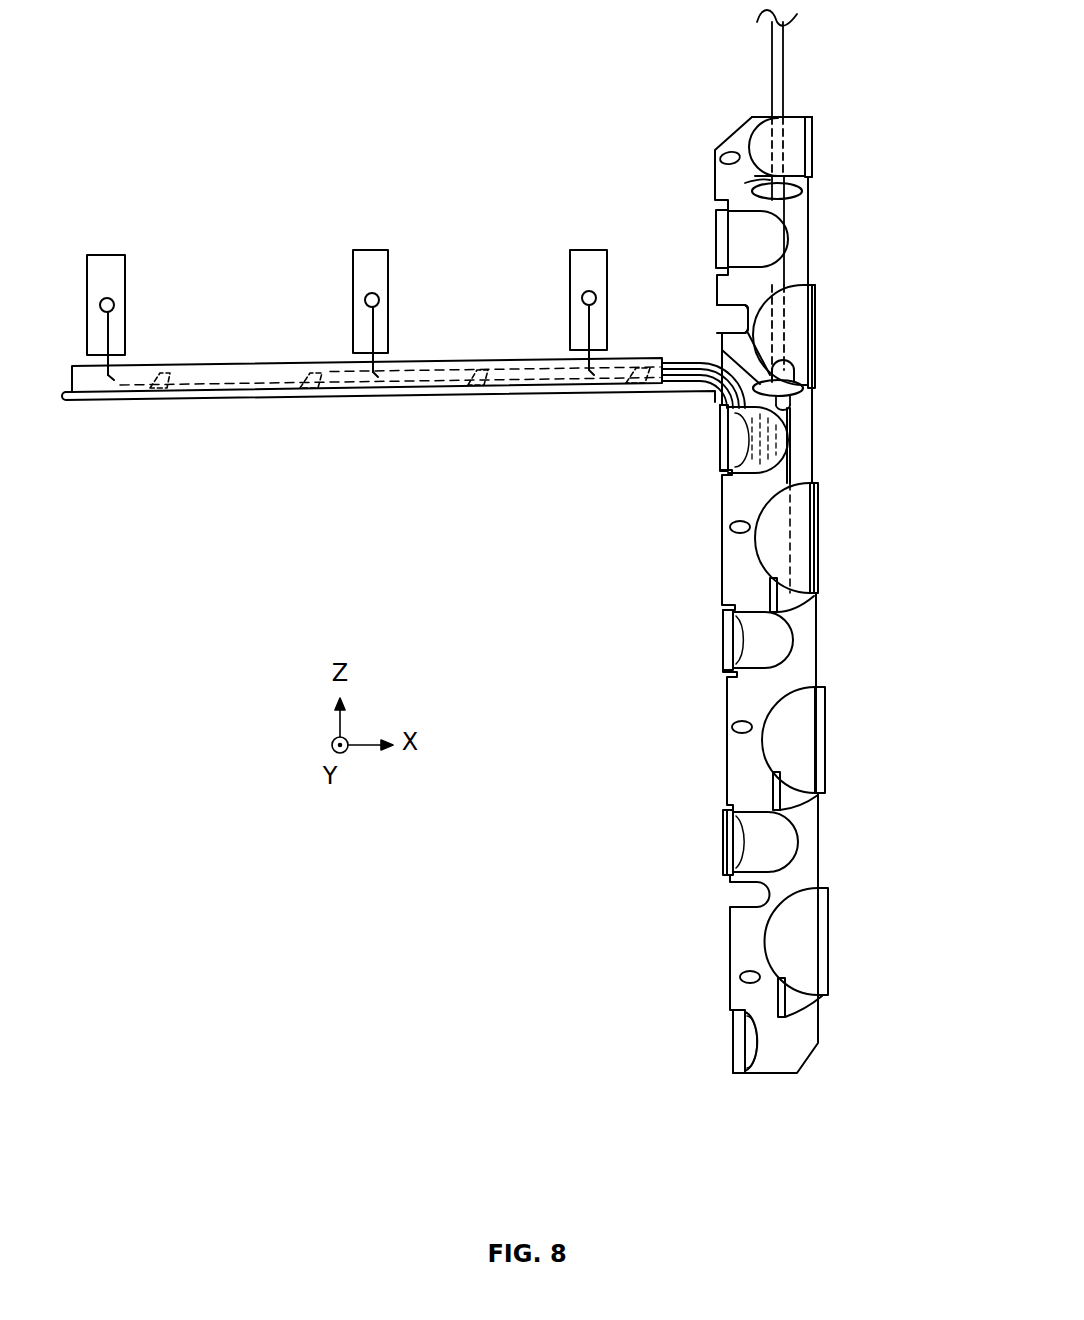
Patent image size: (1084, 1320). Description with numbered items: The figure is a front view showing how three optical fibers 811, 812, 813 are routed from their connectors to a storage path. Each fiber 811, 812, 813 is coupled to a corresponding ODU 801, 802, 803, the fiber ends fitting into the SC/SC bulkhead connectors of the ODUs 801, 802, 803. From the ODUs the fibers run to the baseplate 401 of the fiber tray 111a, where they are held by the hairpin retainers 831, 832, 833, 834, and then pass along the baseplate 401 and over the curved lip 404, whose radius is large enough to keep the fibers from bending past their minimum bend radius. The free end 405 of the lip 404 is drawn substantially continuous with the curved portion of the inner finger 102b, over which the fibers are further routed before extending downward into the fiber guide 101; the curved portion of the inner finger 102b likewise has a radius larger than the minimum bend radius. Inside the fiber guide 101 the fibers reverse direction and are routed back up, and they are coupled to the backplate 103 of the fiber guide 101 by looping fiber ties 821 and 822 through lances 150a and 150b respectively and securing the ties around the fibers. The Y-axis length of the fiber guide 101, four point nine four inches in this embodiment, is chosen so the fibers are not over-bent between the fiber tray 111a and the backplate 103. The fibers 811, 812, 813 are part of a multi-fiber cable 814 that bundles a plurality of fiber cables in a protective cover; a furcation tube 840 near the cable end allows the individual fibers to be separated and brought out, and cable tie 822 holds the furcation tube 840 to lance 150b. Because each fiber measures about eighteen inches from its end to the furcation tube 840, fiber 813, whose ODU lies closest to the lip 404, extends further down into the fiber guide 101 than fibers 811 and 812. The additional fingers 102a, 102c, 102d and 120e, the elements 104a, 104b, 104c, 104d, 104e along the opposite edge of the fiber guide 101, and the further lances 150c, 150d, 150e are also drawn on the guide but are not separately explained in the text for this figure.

The fiber guide 101 is at (818, 1058).
The backplate 103 is at (745, 933).
The multi-fiber cable 814 is at (787, 37).
The lens 104a is at (795, 137).
The lens 104b is at (798, 318).
The lens 104c is at (807, 580).
The lens 104d is at (812, 707).
The lens 104e is at (810, 910).
The fiber tie 821 is at (800, 190).
The fiber tie 822 is at (797, 405).
The furcation tube 840 is at (790, 375).
The lance 150a is at (750, 178).
The lance 150b is at (723, 333).
The lens holder 150c is at (800, 600).
The lens holder 150d is at (790, 802).
The lens holder 150e is at (792, 995).
The lens 102a is at (733, 237).
The inner finger 102b is at (733, 437).
The lens 102c is at (737, 640).
The lens 102d is at (740, 842).
The lens 120e is at (745, 1045).
The curved lip 404 is at (677, 392).
The free end 405 is at (717, 402).
The baseplate 401 is at (232, 392).
The fiber tray 111a is at (112, 410).
The hairpin retainer 831 is at (163, 392).
The hairpin retainer 832 is at (312, 392).
The hairpin retainer 833 is at (480, 388).
The hairpin retainer 834 is at (637, 365).
The ODU 801 is at (118, 258).
The ODU 802 is at (384, 256).
The ODU 803 is at (577, 256).
The optical fiber 811 is at (108, 337).
The optical fiber 812 is at (373, 335).
The optical fiber 813 is at (590, 336).